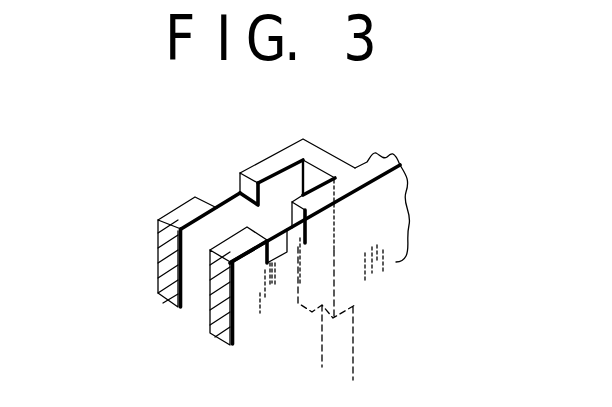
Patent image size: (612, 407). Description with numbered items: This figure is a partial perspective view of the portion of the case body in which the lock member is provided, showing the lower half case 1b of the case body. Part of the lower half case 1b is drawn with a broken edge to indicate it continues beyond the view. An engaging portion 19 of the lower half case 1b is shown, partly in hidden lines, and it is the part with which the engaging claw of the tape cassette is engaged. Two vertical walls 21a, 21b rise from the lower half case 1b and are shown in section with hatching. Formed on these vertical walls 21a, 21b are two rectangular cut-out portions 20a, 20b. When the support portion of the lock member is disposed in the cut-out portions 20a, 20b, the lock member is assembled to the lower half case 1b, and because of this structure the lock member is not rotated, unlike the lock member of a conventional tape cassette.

The lower half case 1b is at (368, 157).
The engaging portion 19 is at (312, 312).
The rectangular cut-out portion 20a is at (230, 208).
The rectangular cut-out portion 20b is at (278, 248).
The vertical wall 21a is at (196, 198).
The vertical wall 21b is at (244, 250).